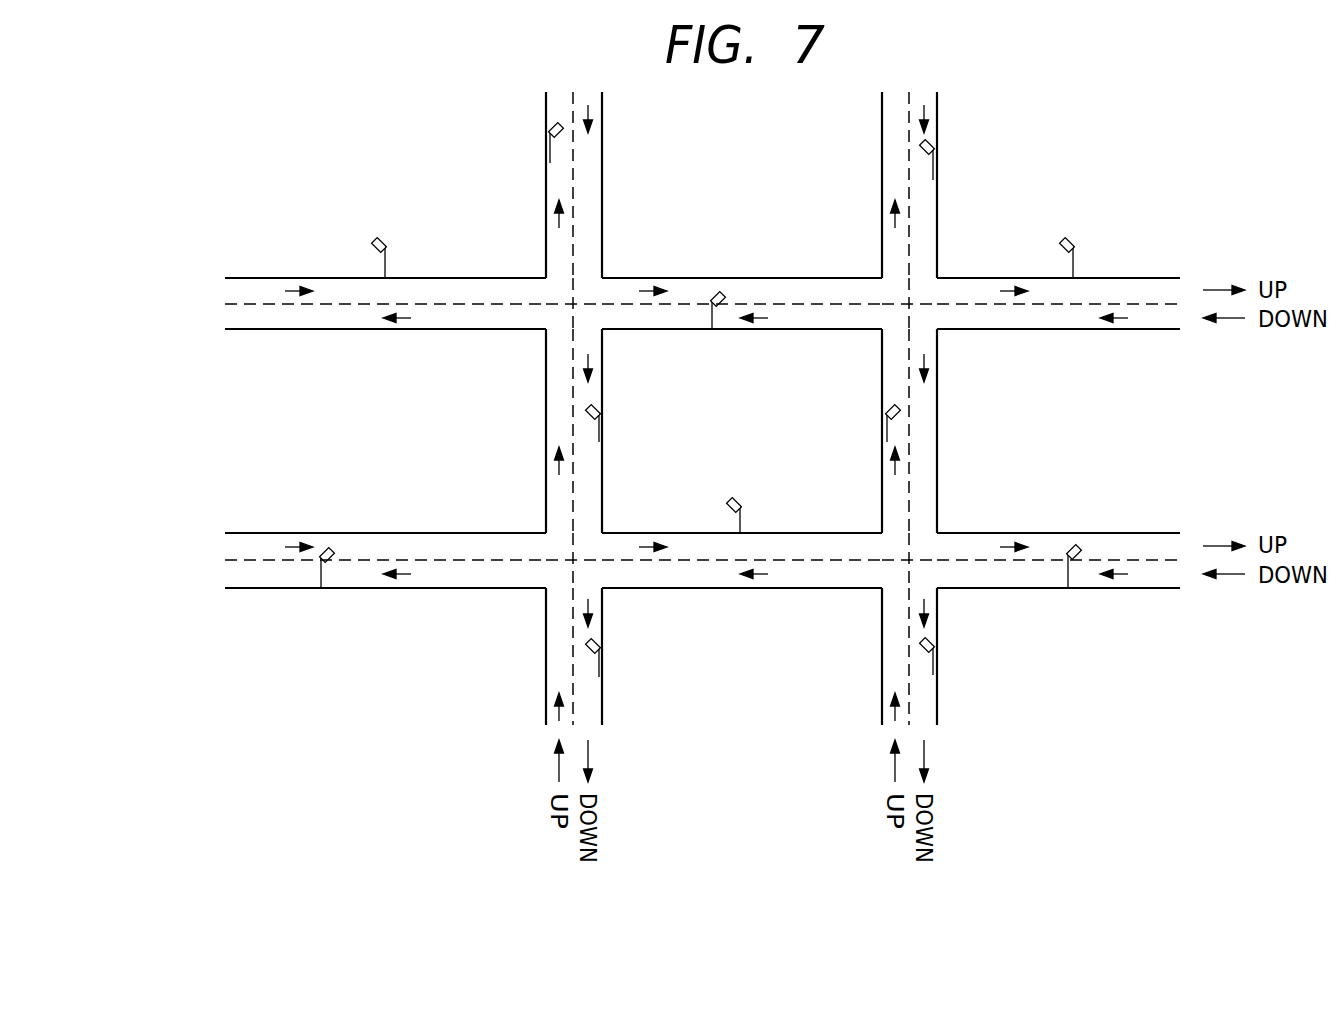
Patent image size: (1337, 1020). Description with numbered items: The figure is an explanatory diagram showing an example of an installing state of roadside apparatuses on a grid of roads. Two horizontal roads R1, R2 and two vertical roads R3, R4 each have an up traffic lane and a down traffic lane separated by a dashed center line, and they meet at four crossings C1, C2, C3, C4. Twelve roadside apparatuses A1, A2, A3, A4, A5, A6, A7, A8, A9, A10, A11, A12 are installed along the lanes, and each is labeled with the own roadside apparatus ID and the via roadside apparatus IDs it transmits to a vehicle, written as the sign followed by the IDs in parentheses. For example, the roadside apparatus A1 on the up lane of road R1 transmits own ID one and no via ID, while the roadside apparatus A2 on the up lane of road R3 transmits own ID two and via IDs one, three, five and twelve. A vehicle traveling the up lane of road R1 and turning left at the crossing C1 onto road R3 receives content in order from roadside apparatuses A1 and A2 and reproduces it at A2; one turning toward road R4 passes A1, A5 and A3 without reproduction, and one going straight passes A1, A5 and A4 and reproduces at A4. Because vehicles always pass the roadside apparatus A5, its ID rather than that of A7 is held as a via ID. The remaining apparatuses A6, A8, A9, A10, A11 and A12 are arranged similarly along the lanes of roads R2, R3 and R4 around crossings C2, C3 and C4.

The roadside apparatus A1 is at (387, 265).
The roadside apparatus A2 is at (548, 147).
The roadside apparatus A3 is at (936, 161).
The roadside apparatus A4 is at (1075, 262).
The roadside apparatus A5 is at (713, 328).
The roadside apparatus A6 is at (602, 427).
The roadside apparatus A7 is at (884, 432).
The roadside apparatus A8 is at (742, 522).
The roadside apparatus A9 is at (319, 573).
The roadside apparatus A10 is at (601, 665).
The roadside apparatus A11 is at (934, 664).
The roadside apparatus A12 is at (1067, 572).
The road R1 is at (263, 278).
The road R2 is at (262, 533).
The road R3 is at (602, 172).
The road R4 is at (937, 218).
The crossing C1 is at (588, 297).
The crossing C2 is at (923, 313).
The crossing C3 is at (553, 575).
The crossing C4 is at (887, 573).